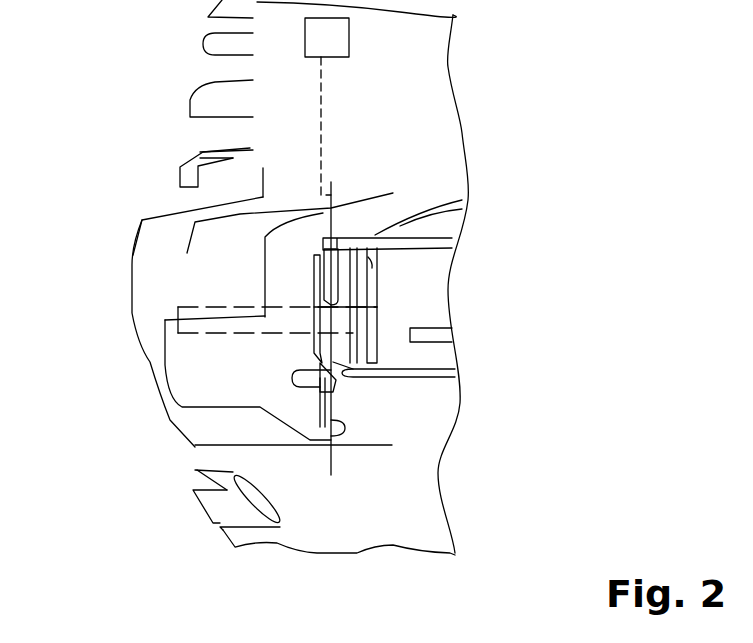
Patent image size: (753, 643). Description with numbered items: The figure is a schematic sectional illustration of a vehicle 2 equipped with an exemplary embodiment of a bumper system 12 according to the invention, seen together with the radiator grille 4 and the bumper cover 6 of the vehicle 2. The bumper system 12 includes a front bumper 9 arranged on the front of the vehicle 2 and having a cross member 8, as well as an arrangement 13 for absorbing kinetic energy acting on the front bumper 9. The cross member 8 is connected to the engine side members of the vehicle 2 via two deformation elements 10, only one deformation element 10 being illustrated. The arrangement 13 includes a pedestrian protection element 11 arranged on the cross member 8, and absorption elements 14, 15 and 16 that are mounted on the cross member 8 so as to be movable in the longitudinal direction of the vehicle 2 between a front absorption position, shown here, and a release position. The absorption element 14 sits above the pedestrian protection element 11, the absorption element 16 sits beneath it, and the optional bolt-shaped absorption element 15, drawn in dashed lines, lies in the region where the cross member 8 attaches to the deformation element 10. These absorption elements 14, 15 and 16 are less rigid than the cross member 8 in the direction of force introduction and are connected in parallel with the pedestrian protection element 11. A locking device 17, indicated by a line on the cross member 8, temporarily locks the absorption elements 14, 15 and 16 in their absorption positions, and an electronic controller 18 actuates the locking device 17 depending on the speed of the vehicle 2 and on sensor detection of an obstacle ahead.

The vehicle 2 is at (512, 75).
The radiator grille 4 is at (188, 106).
The bumper cover 6 is at (131, 295).
The cross member 8 is at (355, 376).
The front bumper 9 is at (370, 185).
The deformation element 10 is at (438, 200).
The pedestrian protection element 11 is at (207, 372).
The bumper system 12 is at (408, 160).
The arrangement for absorbing kinetic energy 13 is at (310, 468).
The absorption element 14 is at (218, 217).
The absorption element 15 is at (210, 306).
The absorption element 16 is at (213, 447).
The locking device 17 is at (331, 462).
The electronic controller 18 is at (305, 35).